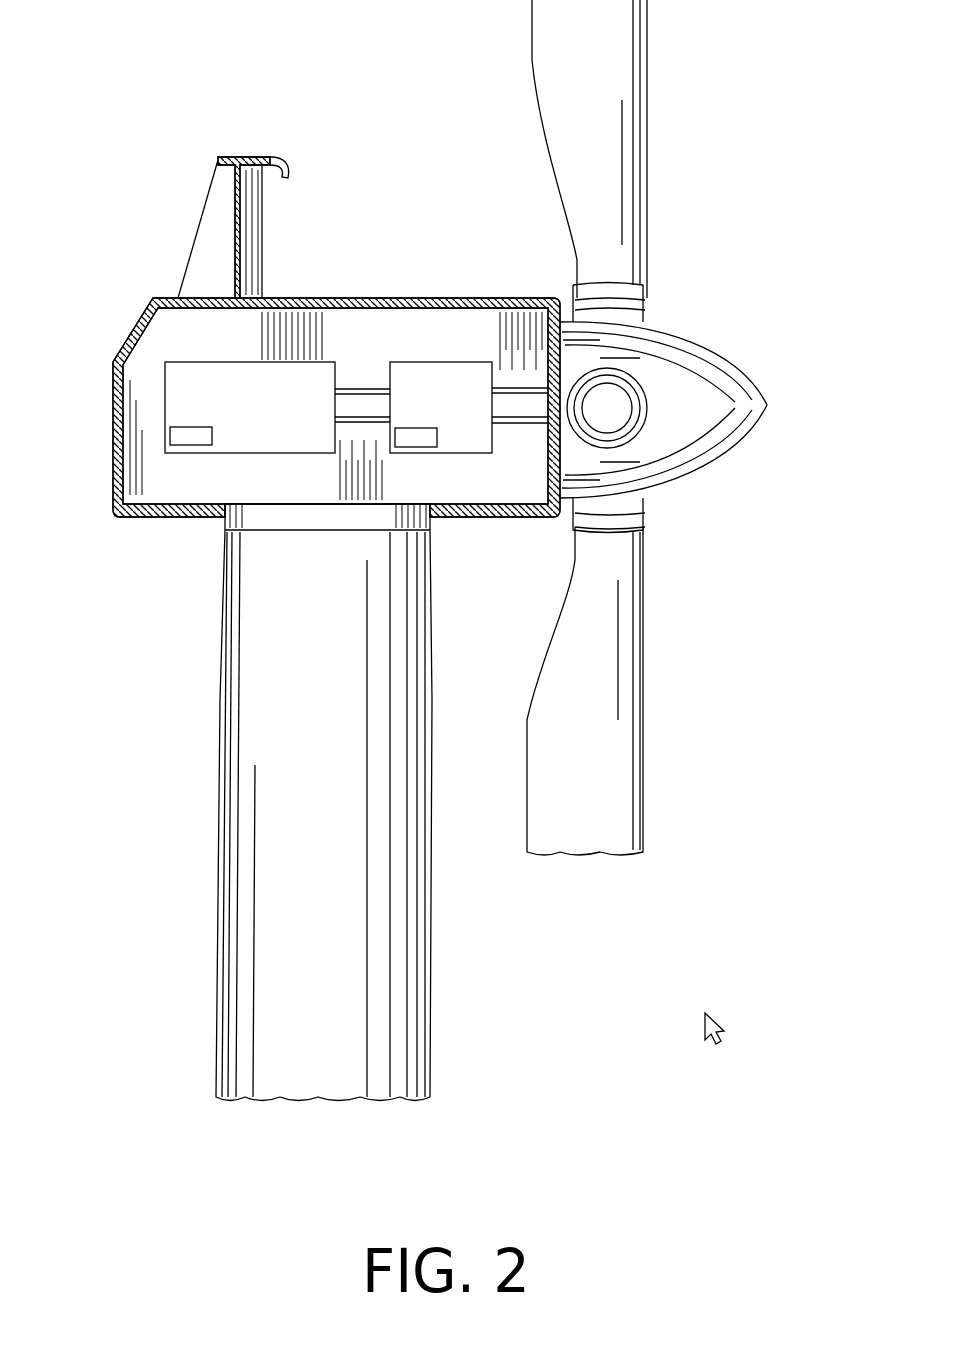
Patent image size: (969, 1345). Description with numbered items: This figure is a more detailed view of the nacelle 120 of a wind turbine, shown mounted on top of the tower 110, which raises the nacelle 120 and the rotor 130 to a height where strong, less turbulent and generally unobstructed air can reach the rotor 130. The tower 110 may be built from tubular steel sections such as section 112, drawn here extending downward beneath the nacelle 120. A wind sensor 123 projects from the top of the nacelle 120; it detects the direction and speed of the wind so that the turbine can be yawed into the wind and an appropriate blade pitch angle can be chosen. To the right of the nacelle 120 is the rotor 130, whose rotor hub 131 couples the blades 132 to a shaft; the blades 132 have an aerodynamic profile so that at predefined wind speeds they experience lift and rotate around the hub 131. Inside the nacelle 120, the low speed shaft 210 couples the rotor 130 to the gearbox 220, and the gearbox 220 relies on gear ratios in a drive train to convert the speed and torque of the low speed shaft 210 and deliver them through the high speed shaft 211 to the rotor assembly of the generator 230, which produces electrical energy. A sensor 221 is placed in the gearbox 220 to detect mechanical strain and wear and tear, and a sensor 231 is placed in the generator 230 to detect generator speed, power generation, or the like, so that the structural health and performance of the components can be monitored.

The tower 110 is at (206, 845).
The tubular steel section 112 is at (220, 723).
The nacelle 120 is at (86, 369).
The wind sensor 123 is at (228, 158).
The rotor 130 is at (744, 449).
The rotor hub 131 is at (698, 345).
The blade 132 is at (648, 133).
The low speed shaft 210 is at (514, 430).
The high speed shaft 211 is at (358, 388).
The gearbox 220 is at (461, 361).
The sensor 221 is at (416, 449).
The generator 230 is at (228, 361).
The sensor 231 is at (188, 447).